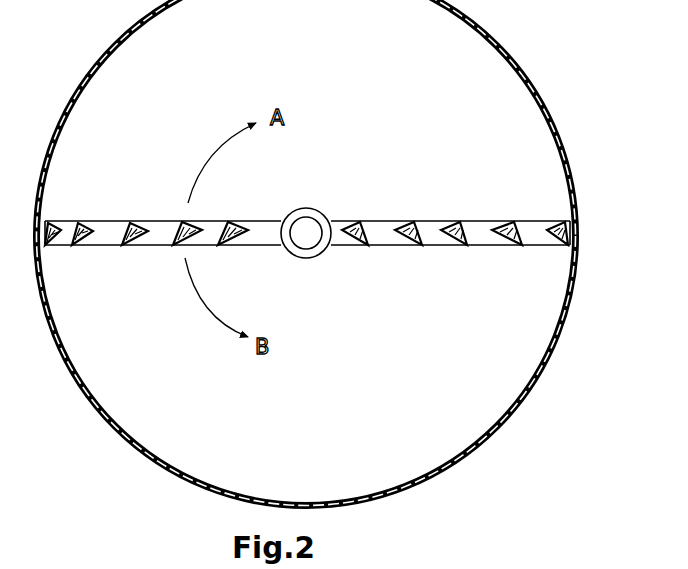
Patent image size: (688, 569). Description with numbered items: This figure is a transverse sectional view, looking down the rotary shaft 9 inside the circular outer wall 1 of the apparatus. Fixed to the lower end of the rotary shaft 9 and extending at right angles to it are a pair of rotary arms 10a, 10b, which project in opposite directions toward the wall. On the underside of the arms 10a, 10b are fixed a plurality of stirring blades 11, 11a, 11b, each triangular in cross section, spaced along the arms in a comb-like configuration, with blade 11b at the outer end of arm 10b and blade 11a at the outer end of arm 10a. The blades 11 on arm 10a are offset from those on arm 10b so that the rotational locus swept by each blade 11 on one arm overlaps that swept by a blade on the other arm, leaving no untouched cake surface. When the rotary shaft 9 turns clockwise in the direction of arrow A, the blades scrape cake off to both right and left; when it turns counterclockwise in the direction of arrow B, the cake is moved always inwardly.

The cylindrical container 1 is at (558, 130).
The rotary shaft 9 is at (312, 224).
The rotary arm 10a is at (442, 220).
The rotary arm 10b is at (117, 220).
The stirring blades 11 is at (96, 246).
The stirring blade 11a is at (558, 246).
The stirring blade 11b is at (58, 246).